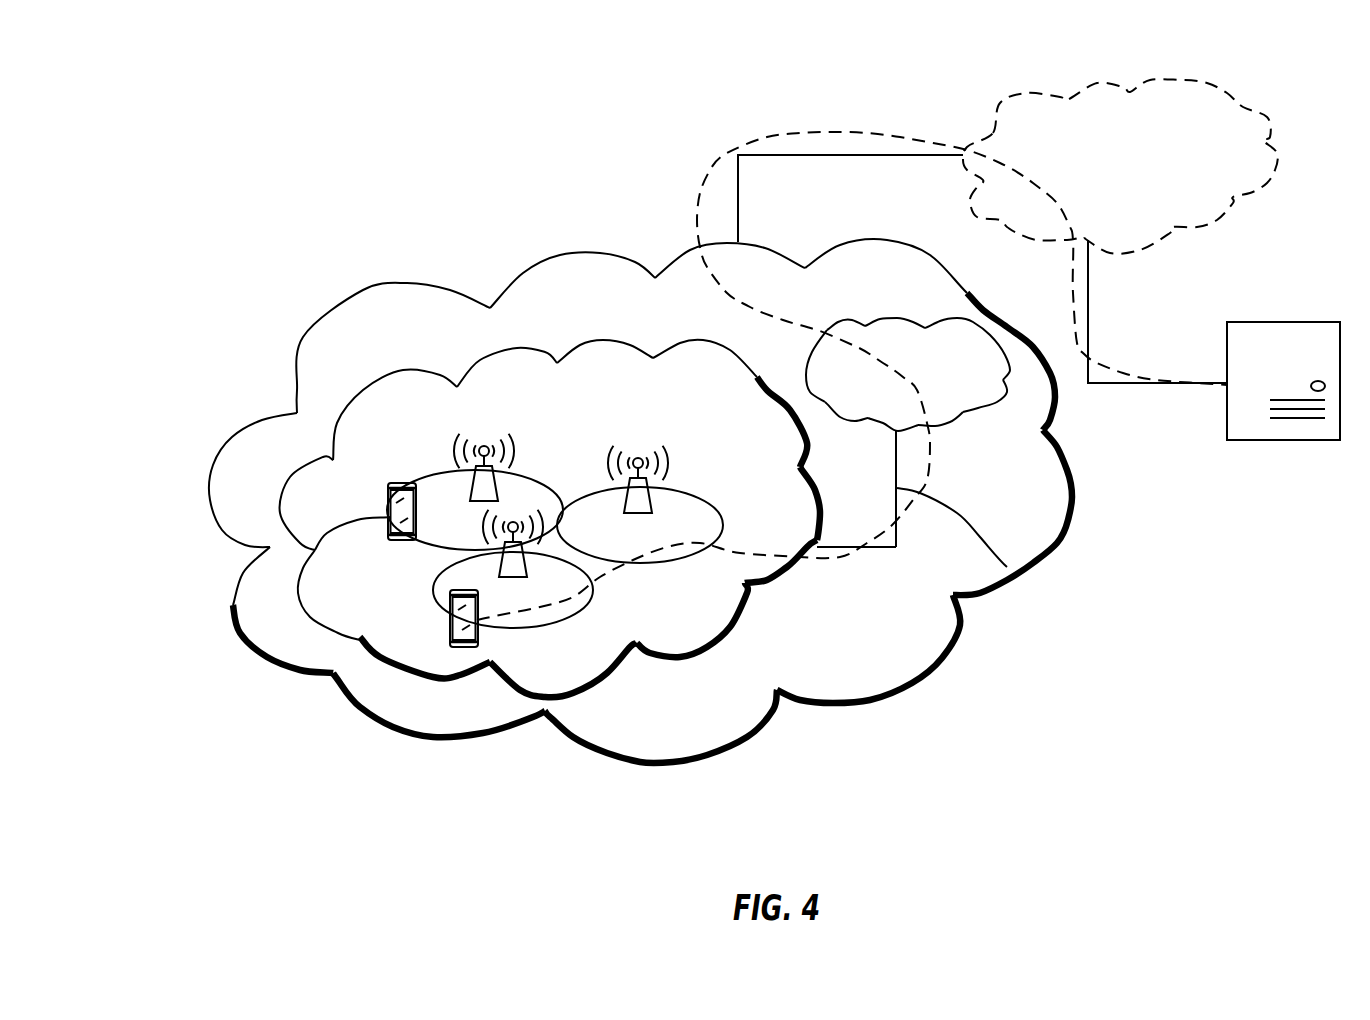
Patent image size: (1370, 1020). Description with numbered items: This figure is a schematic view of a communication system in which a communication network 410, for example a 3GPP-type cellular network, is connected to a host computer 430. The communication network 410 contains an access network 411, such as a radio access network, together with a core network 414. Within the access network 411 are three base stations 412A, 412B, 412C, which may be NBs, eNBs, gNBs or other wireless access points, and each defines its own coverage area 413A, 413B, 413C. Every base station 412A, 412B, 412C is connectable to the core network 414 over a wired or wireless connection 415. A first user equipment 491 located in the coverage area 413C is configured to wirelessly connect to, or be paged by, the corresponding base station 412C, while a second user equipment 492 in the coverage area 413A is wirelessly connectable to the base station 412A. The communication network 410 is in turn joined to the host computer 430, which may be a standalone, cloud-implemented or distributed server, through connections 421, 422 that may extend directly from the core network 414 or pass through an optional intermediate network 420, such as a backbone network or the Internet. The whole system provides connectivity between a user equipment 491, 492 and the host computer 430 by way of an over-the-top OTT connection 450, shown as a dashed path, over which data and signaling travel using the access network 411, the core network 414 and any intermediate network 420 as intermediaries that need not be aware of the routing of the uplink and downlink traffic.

The communication network 410 is at (677, 331).
The access network 411 is at (585, 434).
The base station 412A is at (513, 578).
The base station 412B is at (650, 462).
The base station 412C is at (455, 449).
The coverage area 413A is at (565, 620).
The coverage area 413B is at (657, 565).
The coverage area 413C is at (425, 487).
The core network 414 is at (970, 381).
The connection 415 is at (1007, 567).
The intermediate network 420 is at (1140, 181).
The connection 421 is at (848, 155).
The connection 422 is at (1120, 383).
The host computer 430 is at (1283, 441).
The OTT connection 450 is at (700, 202).
The first user equipment 491 is at (387, 487).
The second user equipment 492 is at (450, 620).